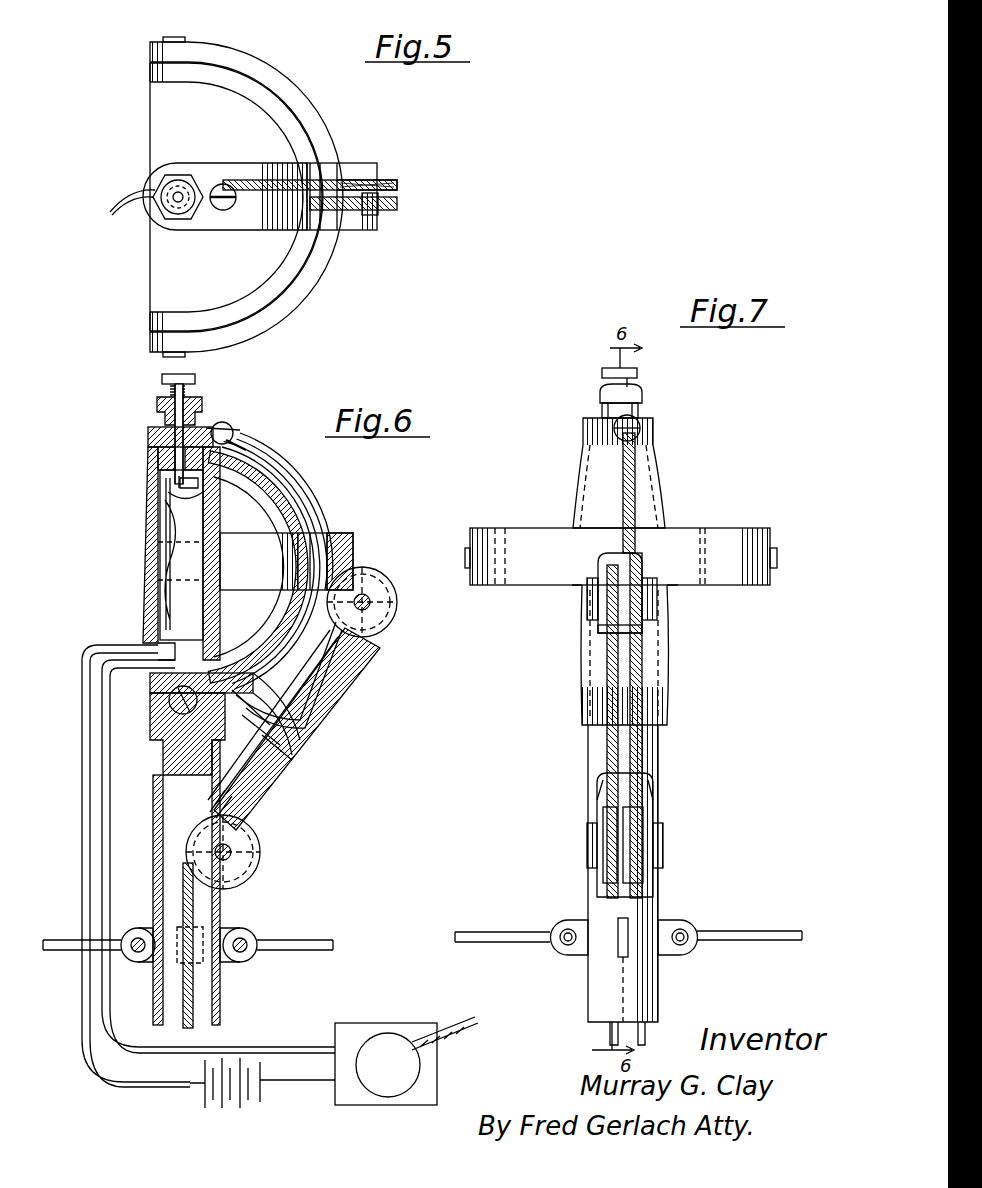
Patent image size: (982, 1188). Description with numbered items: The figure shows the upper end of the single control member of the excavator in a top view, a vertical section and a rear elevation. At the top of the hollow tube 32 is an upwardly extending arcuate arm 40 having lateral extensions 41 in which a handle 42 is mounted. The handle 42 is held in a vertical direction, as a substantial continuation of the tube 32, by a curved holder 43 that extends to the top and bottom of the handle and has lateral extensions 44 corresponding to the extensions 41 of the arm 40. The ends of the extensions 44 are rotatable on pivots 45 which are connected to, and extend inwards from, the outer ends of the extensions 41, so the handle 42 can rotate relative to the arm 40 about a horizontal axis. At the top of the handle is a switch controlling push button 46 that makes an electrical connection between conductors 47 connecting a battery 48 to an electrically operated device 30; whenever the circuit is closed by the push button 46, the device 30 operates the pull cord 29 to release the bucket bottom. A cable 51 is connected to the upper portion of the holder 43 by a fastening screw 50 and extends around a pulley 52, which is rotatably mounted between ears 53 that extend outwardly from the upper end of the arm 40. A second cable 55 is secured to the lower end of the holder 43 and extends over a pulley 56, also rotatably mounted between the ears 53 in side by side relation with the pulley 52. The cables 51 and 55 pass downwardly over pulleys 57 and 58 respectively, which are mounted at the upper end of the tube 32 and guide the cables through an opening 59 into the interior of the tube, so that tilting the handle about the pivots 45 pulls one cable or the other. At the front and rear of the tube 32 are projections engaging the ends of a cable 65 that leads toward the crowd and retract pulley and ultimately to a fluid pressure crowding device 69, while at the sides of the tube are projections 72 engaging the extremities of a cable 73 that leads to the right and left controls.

In FIG. 6, the pull cord 29 is at (445, 1033).
In FIG. 6, the electrical device 30 is at (392, 1023).
In FIG. 6, the hollow tube 32 is at (152, 1022).
In FIG. 7, the hollow tube 32 is at (588, 1000).
In FIG. 6, the arcuate arm 40 is at (283, 738).
In FIG. 7, the arcuate arm 40 is at (668, 678).
In FIG. 5, the lateral extensions 41 is at (286, 80).
In FIG. 6, the lateral extensions 41 is at (350, 540).
In FIG. 7, the lateral extensions 41 is at (530, 585).
In FIG. 6, the handle 42 is at (150, 540).
In FIG. 6, the curved holder 43 is at (325, 684).
In FIG. 7, the curved holder 43 is at (662, 492).
In FIG. 5, the lateral extensions 44 is at (265, 116).
In FIG. 6, the lateral extensions 44 is at (238, 584).
In FIG. 5, the pivots 45 is at (180, 37).
In FIG. 6, the pivots 45 is at (157, 578).
In FIG. 7, the pivots 45 is at (465, 556).
In FIG. 5, the push button 46 is at (177, 216).
In FIG. 6, the push button 46 is at (207, 383).
In FIG. 7, the push button 46 is at (645, 398).
In FIG. 6, the conductors 47 is at (205, 495).
In FIG. 6, the battery 48 is at (240, 1108).
In FIG. 5, the fastening screw 50 is at (222, 212).
In FIG. 6, the fastening screw 50 is at (235, 430).
In FIG. 7, the fastening screw 50 is at (645, 428).
In FIG. 5, the cable 51 is at (353, 178).
In FIG. 6, the cable 51 is at (318, 522).
In FIG. 7, the cable 51 is at (637, 462).
In FIG. 5, the pulley 52 is at (375, 182).
In FIG. 7, the pulley 52 is at (652, 628).
In FIG. 5, the ears 53 is at (345, 163).
In FIG. 7, the ears 53 is at (590, 615).
In FIG. 5, the cable 55 is at (400, 203).
In FIG. 6, the cable 55 is at (302, 702).
In FIG. 7, the cable 55 is at (604, 750).
In FIG. 5, the pulley 56 is at (380, 215).
In FIG. 6, the pulley 56 is at (397, 608).
In FIG. 7, the pulley 56 is at (600, 632).
In FIG. 7, the pulley 57 is at (643, 812).
In FIG. 6, the pulley 58 is at (260, 848).
In FIG. 7, the pulley 58 is at (597, 817).
In FIG. 6, the opening 59 is at (225, 802).
In FIG. 7, the opening 59 is at (643, 785).
In FIG. 6, the cable 65 is at (78, 962).
In FIG. 6, the fluid pressure crowding device 69 is at (137, 928).
In FIG. 7, the projections 72 is at (575, 920).
In FIG. 7, the cable 73 is at (492, 942).